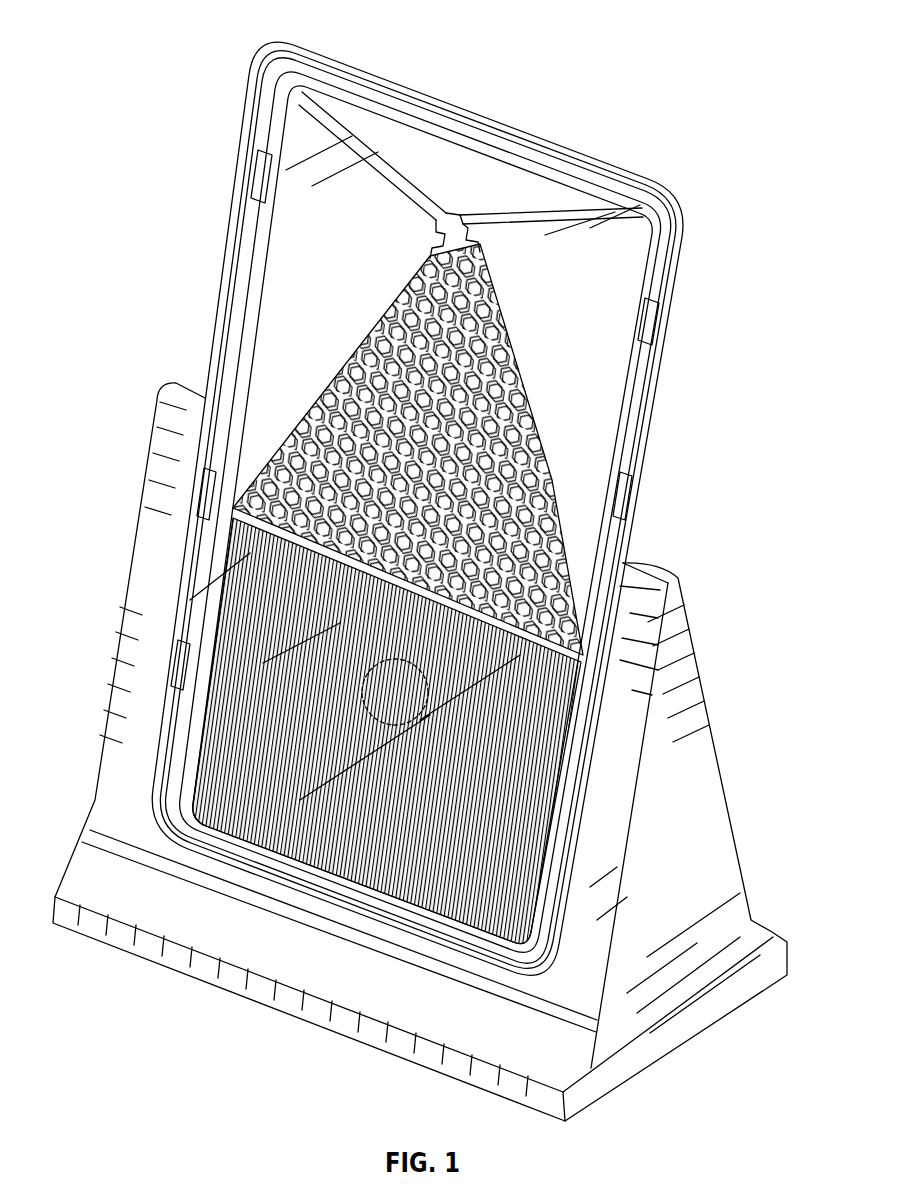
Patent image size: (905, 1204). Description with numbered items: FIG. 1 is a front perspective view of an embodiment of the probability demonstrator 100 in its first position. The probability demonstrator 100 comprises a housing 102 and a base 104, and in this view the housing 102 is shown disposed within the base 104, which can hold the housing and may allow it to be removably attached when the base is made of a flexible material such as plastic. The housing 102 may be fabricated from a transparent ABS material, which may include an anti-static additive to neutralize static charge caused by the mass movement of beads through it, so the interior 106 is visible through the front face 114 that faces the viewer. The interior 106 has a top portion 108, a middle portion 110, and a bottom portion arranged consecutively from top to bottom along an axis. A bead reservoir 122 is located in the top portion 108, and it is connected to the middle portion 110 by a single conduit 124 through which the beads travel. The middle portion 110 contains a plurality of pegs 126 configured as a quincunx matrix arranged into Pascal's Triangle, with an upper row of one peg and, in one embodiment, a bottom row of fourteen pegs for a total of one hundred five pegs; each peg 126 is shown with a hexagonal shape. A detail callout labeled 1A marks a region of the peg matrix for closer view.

The probability demonstrator 100 is at (670, 136).
The housing 102 is at (677, 275).
The base 104 is at (698, 733).
The interior 106 is at (600, 373).
The top portion 108 is at (484, 147).
The middle portion 110 is at (300, 292).
The front face 114 is at (357, 217).
The bead reservoir 122 is at (502, 192).
The single conduit 124 is at (458, 213).
The pegs 126 is at (408, 286).
The detail view callout 1A is at (430, 675).